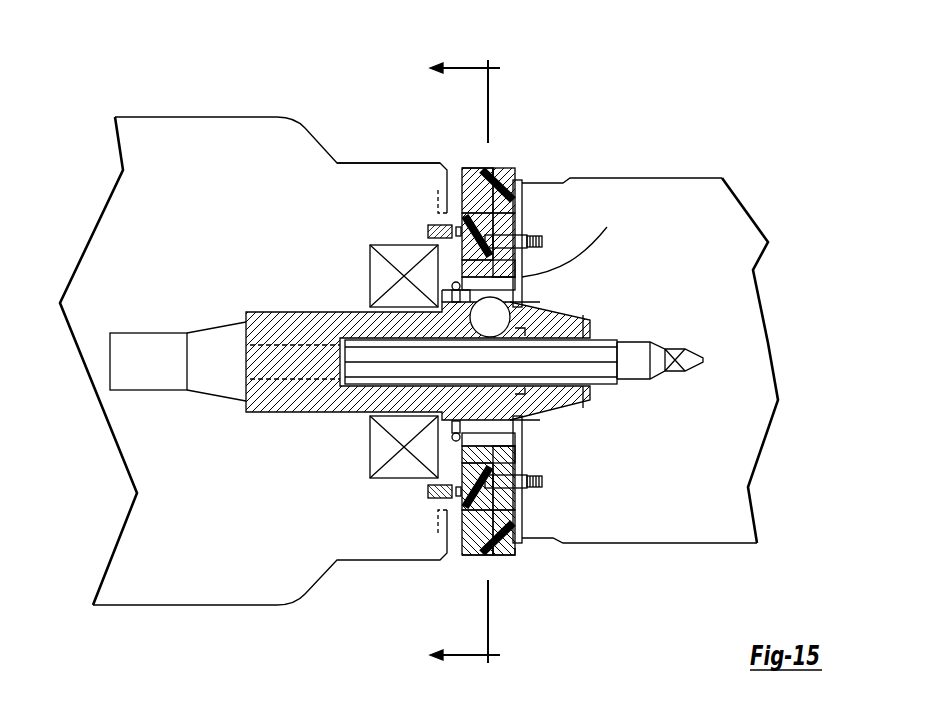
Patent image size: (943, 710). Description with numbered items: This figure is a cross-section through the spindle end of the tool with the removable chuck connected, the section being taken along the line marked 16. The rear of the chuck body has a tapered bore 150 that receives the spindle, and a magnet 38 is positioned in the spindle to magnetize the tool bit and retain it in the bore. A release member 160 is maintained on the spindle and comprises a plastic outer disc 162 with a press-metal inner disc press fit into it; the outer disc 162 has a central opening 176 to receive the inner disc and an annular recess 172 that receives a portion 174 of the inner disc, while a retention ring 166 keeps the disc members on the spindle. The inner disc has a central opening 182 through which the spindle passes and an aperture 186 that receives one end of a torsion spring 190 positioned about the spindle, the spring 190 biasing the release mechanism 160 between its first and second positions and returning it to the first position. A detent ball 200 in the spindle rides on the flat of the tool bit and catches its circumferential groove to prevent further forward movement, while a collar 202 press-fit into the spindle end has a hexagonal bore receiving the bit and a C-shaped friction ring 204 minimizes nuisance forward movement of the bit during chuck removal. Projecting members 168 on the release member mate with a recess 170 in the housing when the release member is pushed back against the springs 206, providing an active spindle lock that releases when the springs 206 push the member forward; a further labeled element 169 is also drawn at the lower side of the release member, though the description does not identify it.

The section line 16- 16 is at (448, 365).
The magnet 38 is at (280, 355).
The tapered bore 150 is at (607, 227).
The release member 160 is at (514, 157).
The plastic outer disc 162 is at (495, 168).
The retention ring 166 is at (520, 448).
The projecting members 168 is at (453, 168).
The seal 169 is at (470, 447).
The recess 170 is at (417, 166).
The annular recess 172 is at (515, 560).
The portion of the disc 174 is at (520, 190).
The central opening 176 is at (505, 477).
The central opening 182 is at (598, 390).
The aperture 186 is at (578, 318).
The torsion spring 190 is at (452, 290).
The detent ball 200 is at (487, 322).
The collar 202 is at (625, 333).
The friction ring 204 is at (500, 425).
The springs 206 is at (436, 228).